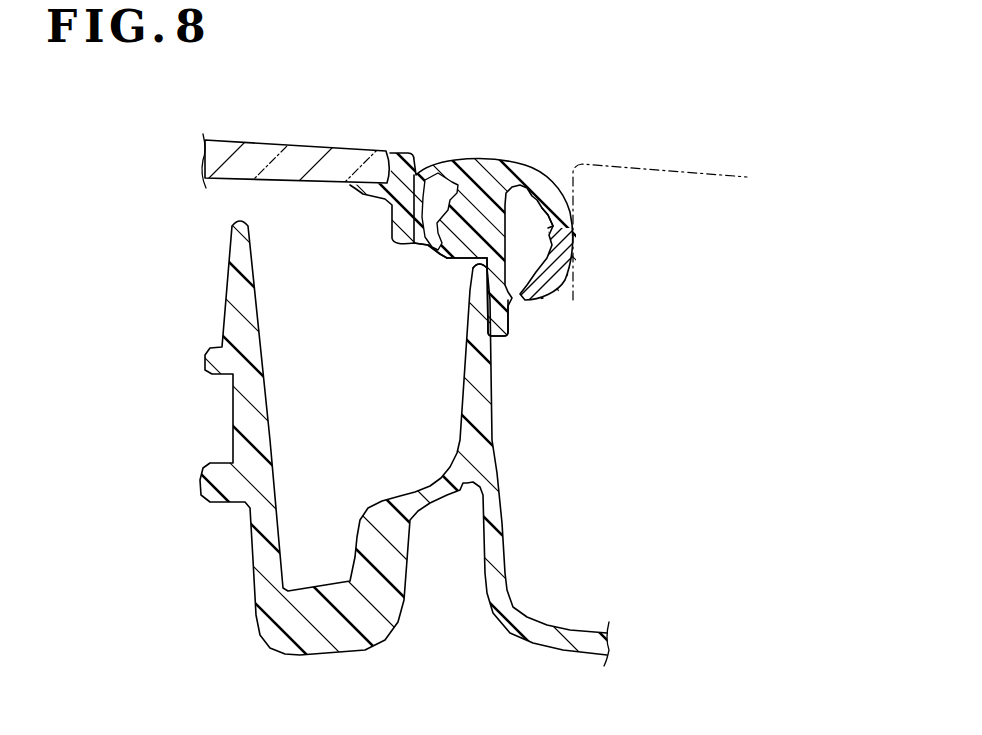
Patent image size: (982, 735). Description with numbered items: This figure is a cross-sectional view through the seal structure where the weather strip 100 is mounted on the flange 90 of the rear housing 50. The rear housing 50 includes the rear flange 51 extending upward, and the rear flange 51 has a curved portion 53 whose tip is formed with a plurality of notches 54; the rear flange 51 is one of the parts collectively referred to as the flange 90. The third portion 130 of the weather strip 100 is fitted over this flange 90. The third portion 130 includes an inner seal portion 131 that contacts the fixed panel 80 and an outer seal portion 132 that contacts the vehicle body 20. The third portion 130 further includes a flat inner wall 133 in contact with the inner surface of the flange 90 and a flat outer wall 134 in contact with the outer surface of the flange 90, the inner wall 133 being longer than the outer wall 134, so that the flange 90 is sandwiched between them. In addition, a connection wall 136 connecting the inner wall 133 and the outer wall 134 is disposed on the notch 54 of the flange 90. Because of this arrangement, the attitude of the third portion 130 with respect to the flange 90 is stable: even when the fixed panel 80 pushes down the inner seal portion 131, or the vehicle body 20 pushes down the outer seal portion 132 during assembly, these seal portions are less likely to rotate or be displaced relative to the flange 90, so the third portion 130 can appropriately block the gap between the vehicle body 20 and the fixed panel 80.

The vehicle body 20 is at (667, 167).
The rear housing 50 is at (482, 532).
The rear flange 51 is at (438, 443).
The curved portion 53 is at (438, 443).
The notch 54 is at (472, 273).
The fixed panel 80 is at (280, 142).
The flange 90 is at (438, 443).
The weather strip 100 is at (491, 209).
The third portion 130 is at (485, 160).
The inner seal portion 131 is at (445, 160).
The outer seal portion 132 is at (530, 167).
The inner wall 133 is at (430, 242).
The outer wall 134 is at (508, 313).
The connection wall 136 is at (460, 262).